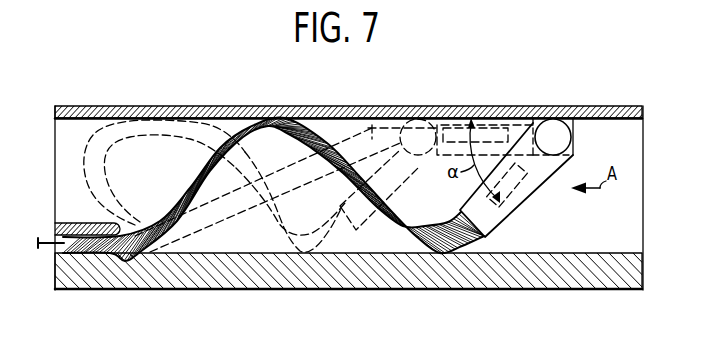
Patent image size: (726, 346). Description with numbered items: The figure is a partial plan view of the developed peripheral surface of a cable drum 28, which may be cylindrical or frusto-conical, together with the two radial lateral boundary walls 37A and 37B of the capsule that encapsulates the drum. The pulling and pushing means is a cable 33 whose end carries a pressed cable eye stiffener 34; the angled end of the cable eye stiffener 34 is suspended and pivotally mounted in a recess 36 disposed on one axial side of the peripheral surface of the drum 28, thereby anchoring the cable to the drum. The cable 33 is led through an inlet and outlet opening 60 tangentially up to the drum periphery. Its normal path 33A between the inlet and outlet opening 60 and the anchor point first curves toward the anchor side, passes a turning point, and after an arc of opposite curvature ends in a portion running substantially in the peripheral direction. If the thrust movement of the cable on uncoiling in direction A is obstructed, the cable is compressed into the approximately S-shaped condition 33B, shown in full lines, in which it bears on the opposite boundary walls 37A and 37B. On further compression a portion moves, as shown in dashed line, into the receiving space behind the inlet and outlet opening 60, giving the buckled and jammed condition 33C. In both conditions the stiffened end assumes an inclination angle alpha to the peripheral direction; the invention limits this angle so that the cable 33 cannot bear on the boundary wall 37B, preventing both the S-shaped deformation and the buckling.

The cable drum 28 is at (637, 223).
The cable 33 is at (417, 200).
The normal path of the cable 33A is at (374, 125).
The S-shaped condition of the cable 33B is at (280, 118).
The buckled condition of the cable 33C is at (146, 132).
The cable eye stiffener 34 is at (534, 190).
The recess 36 is at (566, 120).
The radial lateral boundary wall 37A is at (498, 107).
The radial lateral boundary wall 37B is at (502, 282).
The inlet and outlet opening 60 is at (62, 254).